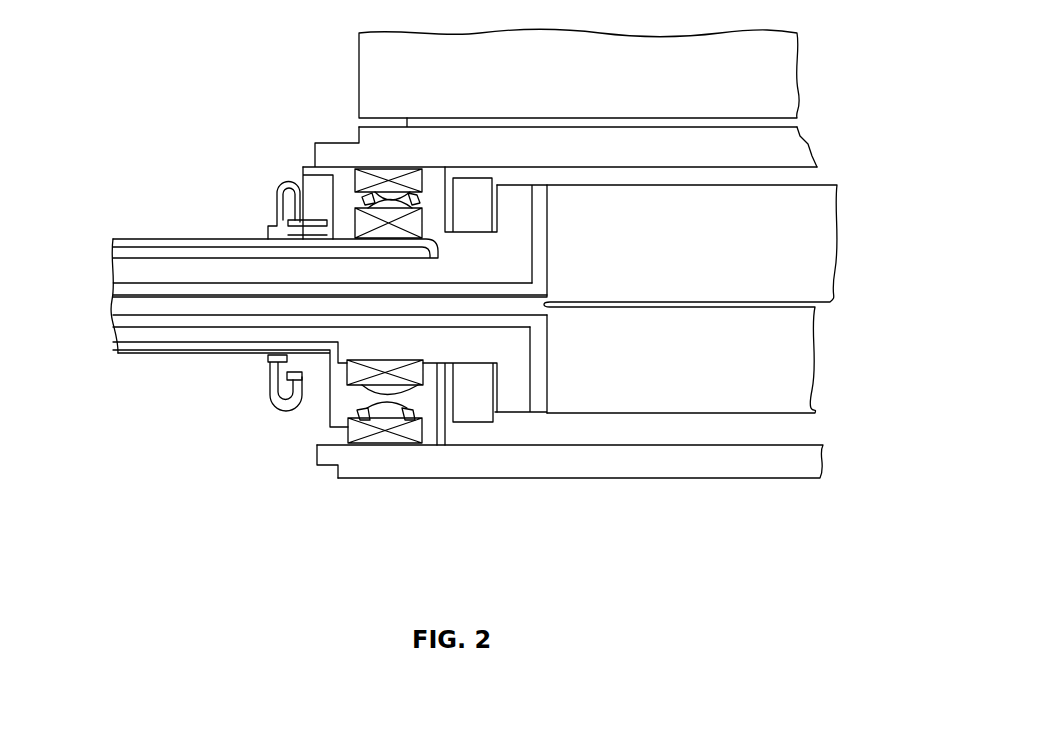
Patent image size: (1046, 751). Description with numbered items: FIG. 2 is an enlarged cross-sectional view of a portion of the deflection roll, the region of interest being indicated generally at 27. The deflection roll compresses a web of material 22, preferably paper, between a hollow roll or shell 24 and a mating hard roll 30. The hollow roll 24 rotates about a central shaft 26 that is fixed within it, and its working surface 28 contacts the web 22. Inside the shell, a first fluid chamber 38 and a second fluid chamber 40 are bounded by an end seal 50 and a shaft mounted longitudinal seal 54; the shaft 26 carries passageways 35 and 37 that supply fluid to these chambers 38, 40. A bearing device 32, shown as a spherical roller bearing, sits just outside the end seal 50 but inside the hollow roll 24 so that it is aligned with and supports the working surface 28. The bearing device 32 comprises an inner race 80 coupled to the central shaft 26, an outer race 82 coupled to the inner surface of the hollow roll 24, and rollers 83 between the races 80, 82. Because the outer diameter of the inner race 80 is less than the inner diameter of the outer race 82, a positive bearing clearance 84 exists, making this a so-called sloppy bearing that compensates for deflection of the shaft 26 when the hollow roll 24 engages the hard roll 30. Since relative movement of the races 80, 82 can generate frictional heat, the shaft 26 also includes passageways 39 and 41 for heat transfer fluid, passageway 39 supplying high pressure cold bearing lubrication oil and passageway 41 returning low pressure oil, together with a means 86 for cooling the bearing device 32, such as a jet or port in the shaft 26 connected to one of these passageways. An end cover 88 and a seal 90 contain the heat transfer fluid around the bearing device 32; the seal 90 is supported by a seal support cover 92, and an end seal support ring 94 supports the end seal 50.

The web of material 22 is at (571, 120).
The hollow roll 24 is at (658, 152).
The central shaft 26 is at (195, 268).
The bearing assembly 27 is at (828, 134).
The working surface 28 is at (358, 130).
The hard roll 30 is at (368, 80).
The bearing device 32 is at (432, 199).
The passageway 35 is at (122, 287).
The passageway 37 is at (145, 325).
The first fluid chamber 38 is at (713, 177).
The fluid passageway 39 is at (135, 250).
The second fluid chamber 40 is at (658, 432).
The fluid passageway 41 is at (195, 343).
The end seal 50 is at (427, 167).
The shaft mounted longitudinal seal 54 is at (700, 300).
The inner race 80 is at (363, 228).
The outer race 82 is at (392, 175).
The rollers 83 is at (437, 175).
The positive bearing clearance 84 is at (397, 402).
The means for cooling the bearing devices 86 is at (433, 222).
The end cover 88 is at (270, 403).
The seal 90 is at (321, 378).
The seal support cover 92 is at (314, 452).
The end seal support ring 94 is at (477, 410).